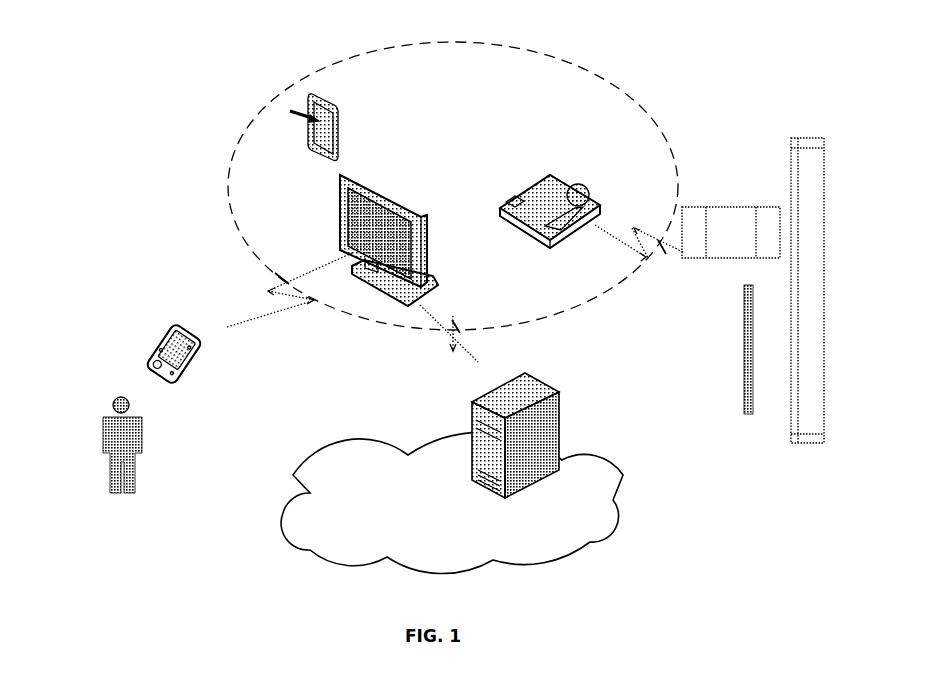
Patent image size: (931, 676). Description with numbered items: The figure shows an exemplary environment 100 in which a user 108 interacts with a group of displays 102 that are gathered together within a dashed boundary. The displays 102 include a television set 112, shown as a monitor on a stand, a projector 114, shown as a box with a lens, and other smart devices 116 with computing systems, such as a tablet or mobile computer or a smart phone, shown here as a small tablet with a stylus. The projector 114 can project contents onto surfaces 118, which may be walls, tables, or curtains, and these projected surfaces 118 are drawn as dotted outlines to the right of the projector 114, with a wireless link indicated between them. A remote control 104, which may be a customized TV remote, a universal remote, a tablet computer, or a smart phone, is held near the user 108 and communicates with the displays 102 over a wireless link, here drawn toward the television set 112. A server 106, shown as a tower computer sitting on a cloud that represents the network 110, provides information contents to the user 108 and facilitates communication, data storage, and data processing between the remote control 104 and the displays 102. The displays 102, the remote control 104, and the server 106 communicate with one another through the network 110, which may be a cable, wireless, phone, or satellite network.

The environment 100 is at (80, 50).
The displays 102 is at (236, 139).
The remote control 104 is at (190, 370).
The server 106 is at (562, 420).
The user 108 is at (120, 452).
The network 110 is at (390, 479).
The television set 112 is at (398, 200).
The projector 114 is at (541, 172).
The smart devices 116 is at (342, 141).
The surfaces 118 is at (808, 148).